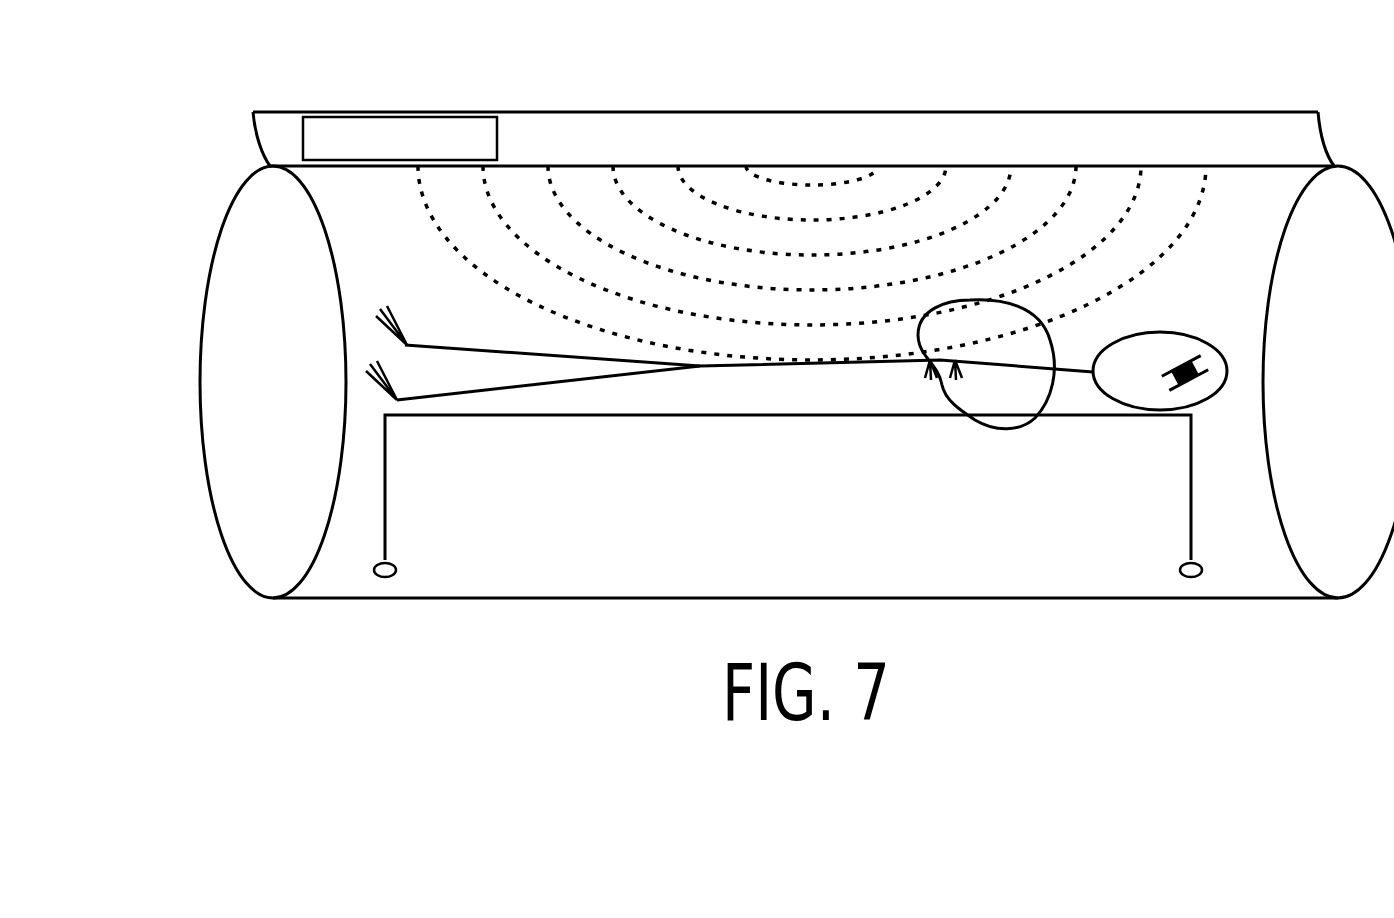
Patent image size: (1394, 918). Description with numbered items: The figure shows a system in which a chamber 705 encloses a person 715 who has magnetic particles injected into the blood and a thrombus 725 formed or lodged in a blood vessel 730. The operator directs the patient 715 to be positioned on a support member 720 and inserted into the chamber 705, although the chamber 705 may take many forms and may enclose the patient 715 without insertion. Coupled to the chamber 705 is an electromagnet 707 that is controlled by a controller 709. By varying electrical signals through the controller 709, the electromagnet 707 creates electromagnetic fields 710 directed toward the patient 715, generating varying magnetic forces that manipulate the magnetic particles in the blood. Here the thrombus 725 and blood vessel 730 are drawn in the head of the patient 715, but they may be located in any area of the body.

The chamber 705 is at (200, 383).
The electromagnet 707 is at (787, 112).
The controller 709 is at (497, 143).
The electromagnetic fields 710 is at (977, 207).
The person 715 is at (755, 367).
The support member 720 is at (850, 415).
The thrombus 725 is at (1183, 366).
The blood vessel 730 is at (1203, 378).